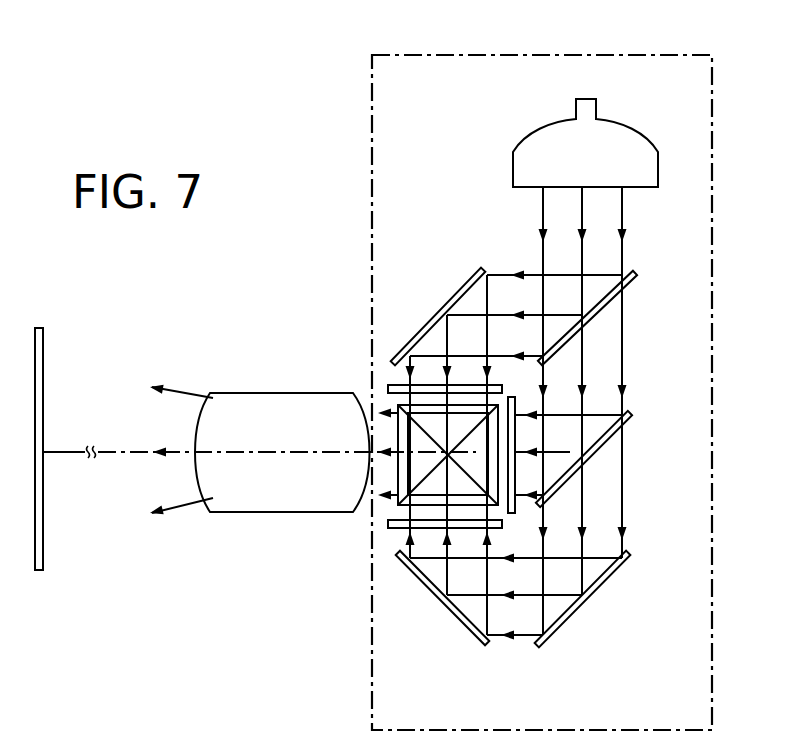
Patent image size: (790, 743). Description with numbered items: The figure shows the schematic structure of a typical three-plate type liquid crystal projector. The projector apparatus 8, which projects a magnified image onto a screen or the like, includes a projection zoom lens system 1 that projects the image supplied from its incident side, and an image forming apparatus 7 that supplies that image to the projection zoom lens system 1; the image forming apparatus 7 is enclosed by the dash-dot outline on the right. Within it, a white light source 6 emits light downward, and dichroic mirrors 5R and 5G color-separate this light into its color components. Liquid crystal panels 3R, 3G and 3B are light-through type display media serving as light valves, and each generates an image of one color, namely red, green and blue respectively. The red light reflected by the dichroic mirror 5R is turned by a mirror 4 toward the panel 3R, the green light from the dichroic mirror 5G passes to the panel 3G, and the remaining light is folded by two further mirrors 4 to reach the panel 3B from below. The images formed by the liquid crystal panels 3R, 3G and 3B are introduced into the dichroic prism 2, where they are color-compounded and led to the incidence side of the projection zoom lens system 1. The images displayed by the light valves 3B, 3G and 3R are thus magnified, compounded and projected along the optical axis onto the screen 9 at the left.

The projection zoom lens system 1 is at (276, 500).
The dichroic prism 2 is at (407, 486).
The liquid crystal panel (red) 3R is at (390, 384).
The liquid crystal panel (green) 3G is at (511, 396).
The liquid crystal panel (blue) 3B is at (393, 530).
The mirror 4 is at (436, 310).
The dichroic mirror (red) 5R is at (642, 261).
The dichroic mirror (green) 5G is at (632, 409).
The white light source 6 is at (620, 152).
The image forming apparatus 7 is at (703, 468).
The projector apparatus 8 is at (289, 601).
The screen 9 is at (43, 522).